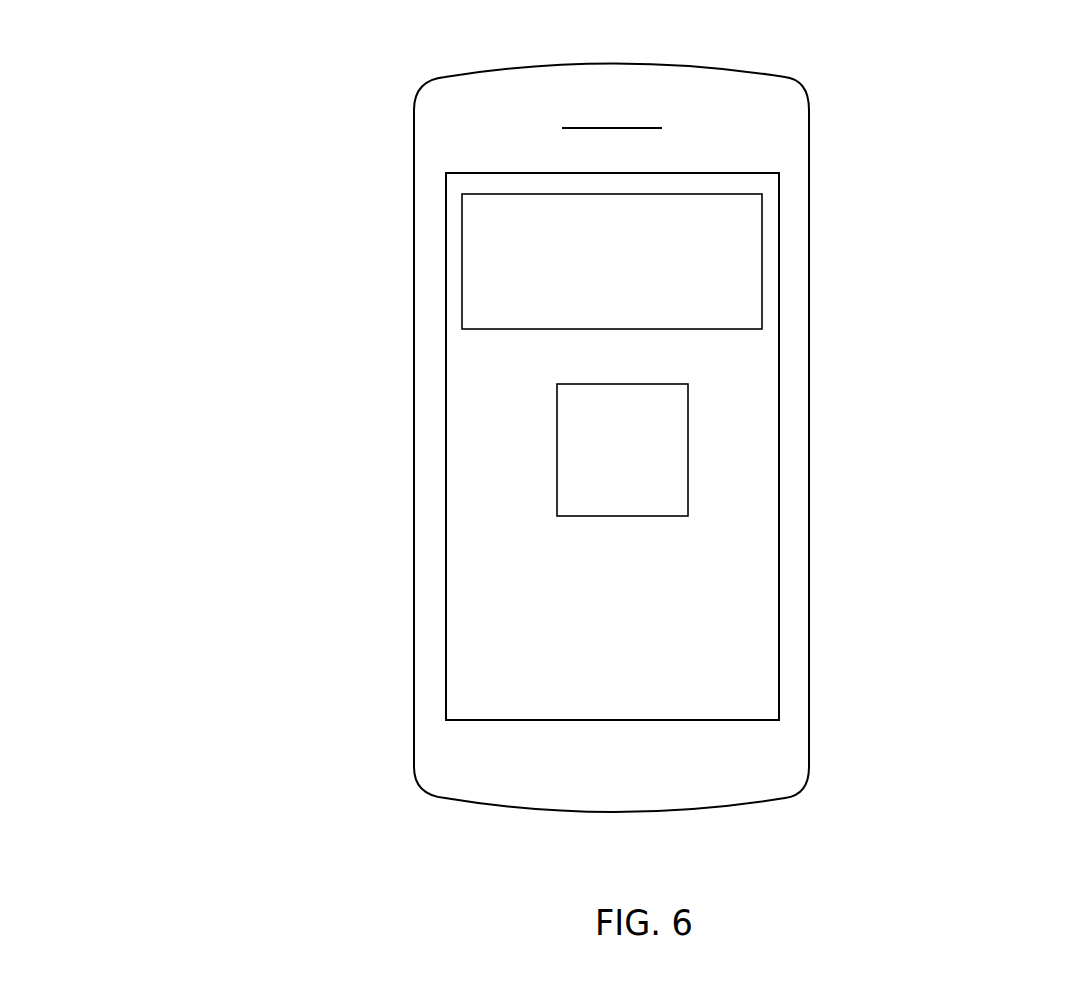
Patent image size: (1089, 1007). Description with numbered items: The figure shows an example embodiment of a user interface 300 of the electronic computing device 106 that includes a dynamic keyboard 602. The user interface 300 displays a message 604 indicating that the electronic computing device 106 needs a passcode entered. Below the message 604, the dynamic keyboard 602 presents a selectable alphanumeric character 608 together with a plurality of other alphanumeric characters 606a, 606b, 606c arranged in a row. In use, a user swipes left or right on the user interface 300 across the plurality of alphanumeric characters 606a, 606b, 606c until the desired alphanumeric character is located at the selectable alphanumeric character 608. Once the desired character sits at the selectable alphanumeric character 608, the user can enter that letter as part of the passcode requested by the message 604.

The electronic computing device 106 is at (210, 116).
The user interface 300 is at (490, 655).
The dynamic keyboard 602 is at (437, 382).
The message 604 is at (743, 253).
The alphanumeric character 606a is at (483, 462).
The alphanumeric character 606b is at (595, 467).
The alphanumeric character 606c is at (762, 453).
The selectable alphanumeric character 608 is at (688, 516).